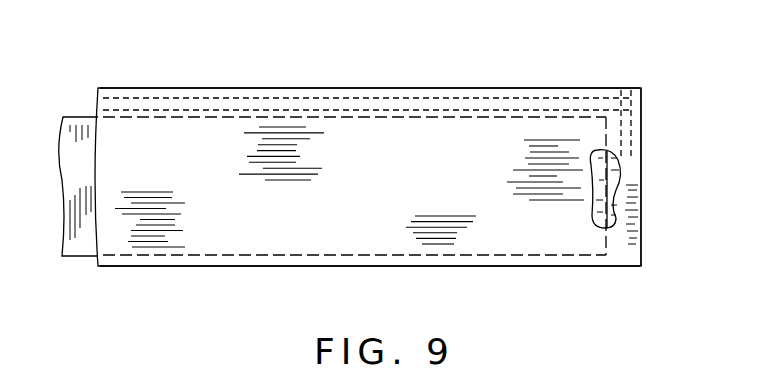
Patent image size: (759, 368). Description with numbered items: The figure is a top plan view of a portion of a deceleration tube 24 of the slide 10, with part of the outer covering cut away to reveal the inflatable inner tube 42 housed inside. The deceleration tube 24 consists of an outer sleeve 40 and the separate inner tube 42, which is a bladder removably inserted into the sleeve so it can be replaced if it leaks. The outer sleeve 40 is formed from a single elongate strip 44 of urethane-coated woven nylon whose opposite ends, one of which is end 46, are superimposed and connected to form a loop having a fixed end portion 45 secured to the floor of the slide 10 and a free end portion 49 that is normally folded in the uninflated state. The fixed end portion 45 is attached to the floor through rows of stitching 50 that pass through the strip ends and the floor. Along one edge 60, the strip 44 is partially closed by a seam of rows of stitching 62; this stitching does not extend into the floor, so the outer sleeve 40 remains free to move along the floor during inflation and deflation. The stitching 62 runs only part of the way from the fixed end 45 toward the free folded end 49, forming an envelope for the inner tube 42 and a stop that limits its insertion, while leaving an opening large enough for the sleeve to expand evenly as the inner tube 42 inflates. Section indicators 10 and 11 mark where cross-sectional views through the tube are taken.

The slide 10 is at (486, 137).
The section line 11- 11 is at (483, 193).
The deceleration tube 24 is at (285, 88).
The outer sleeve 40 is at (200, 232).
The inner inflatable tube 42 is at (83, 246).
The elongate strip 44 is at (551, 228).
The fixed end portion 45 is at (428, 88).
The end of the strip 46 is at (496, 88).
The free end portion 49 is at (303, 266).
The rows of stitching 50 is at (149, 109).
The edge of the strip 60 is at (643, 118).
The rows of stitching 62 is at (622, 88).